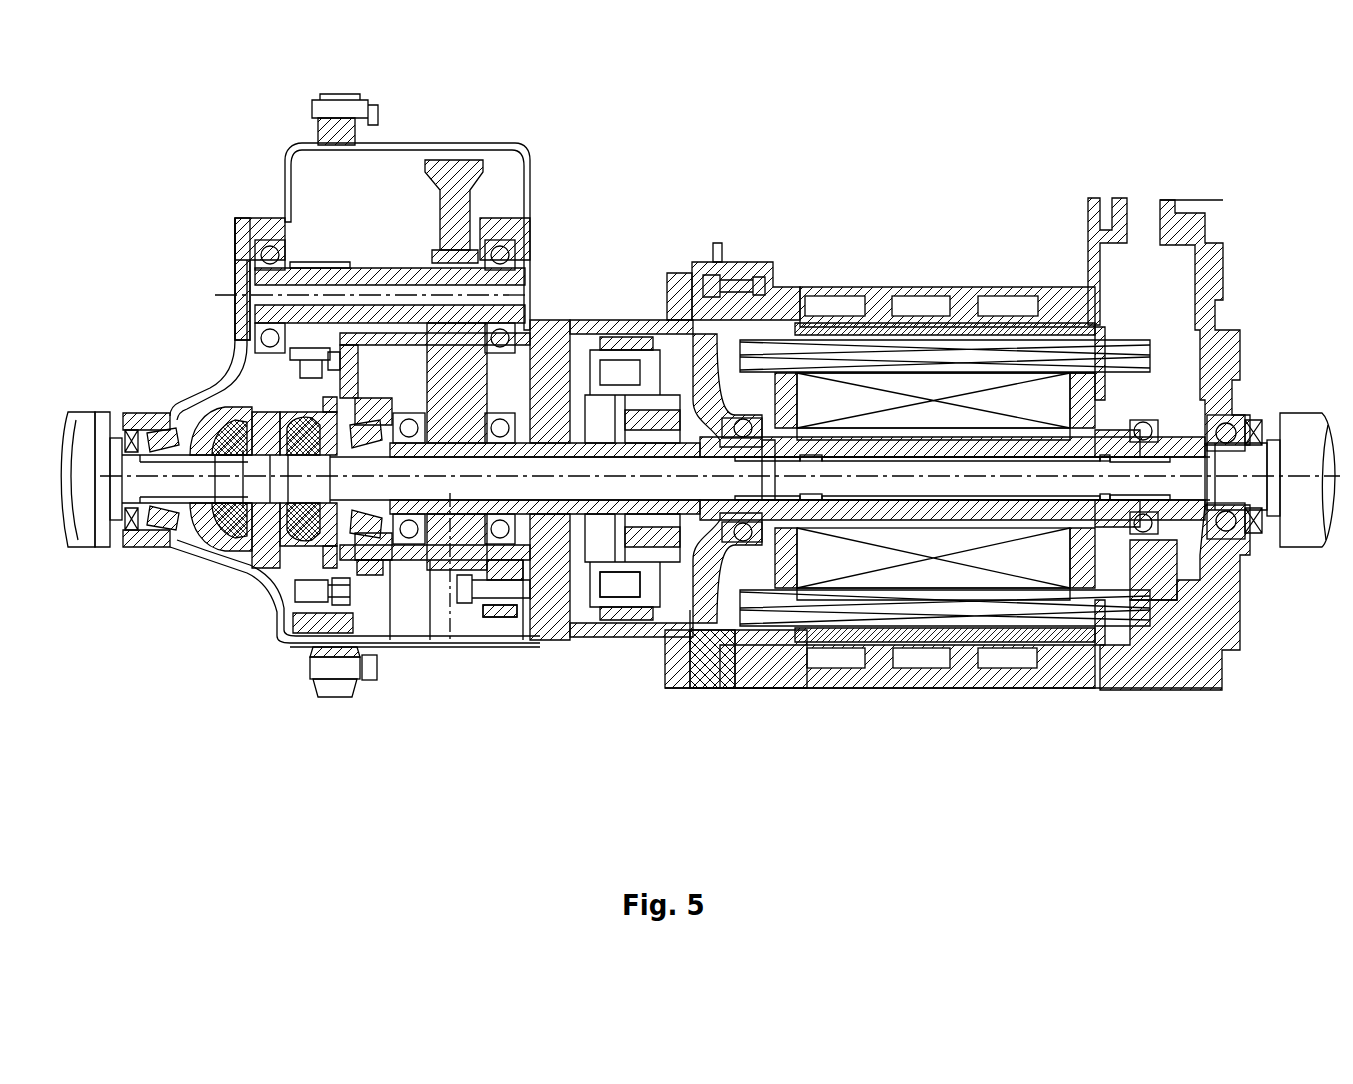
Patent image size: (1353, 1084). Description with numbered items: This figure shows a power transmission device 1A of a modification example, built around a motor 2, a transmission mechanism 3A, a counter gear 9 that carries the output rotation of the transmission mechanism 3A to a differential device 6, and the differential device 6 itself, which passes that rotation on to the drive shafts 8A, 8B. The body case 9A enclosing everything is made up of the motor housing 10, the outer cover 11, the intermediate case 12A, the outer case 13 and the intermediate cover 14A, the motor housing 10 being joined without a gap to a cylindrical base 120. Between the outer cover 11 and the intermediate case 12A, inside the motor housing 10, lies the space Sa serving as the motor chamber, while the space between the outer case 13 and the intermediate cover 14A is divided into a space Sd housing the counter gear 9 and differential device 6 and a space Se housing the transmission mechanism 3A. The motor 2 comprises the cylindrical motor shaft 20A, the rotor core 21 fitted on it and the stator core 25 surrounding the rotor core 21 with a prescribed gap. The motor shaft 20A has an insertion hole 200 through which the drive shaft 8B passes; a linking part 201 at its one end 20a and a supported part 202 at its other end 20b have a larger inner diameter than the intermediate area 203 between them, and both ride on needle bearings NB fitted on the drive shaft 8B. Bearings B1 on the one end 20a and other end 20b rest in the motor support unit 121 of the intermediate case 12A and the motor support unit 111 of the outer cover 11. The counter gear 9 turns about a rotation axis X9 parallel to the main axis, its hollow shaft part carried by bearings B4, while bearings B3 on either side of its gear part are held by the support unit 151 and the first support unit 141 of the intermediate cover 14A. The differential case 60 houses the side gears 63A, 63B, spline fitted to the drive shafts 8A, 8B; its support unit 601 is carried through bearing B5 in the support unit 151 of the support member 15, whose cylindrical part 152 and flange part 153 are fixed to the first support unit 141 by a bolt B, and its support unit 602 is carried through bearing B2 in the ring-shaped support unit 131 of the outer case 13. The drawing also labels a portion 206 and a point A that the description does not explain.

The power transmission device 1A is at (1222, 156).
The motor 2 is at (1088, 130).
The transmission mechanism 3A is at (652, 300).
The differential device 6 is at (226, 393).
The drive shaft 8A is at (88, 425).
The drive shaft 8B is at (1312, 425).
The counter gear 9 is at (510, 171).
The body case 9A is at (1135, 812).
The motor housing 10 is at (912, 700).
The outer cover 11 is at (1109, 702).
The intermediate case 12A is at (695, 700).
The outer case 13 is at (326, 707).
The intermediate cover 14A is at (352, 697).
The support member 15 is at (533, 708).
The one end 20a is at (695, 450).
The other end 20b is at (1208, 452).
The motor shaft 20A is at (1000, 430).
The rotor core 21 is at (1073, 325).
The stator core 25 is at (834, 328).
The differential case 60 is at (230, 562).
The side gear 63A is at (207, 410).
The side gear 63B is at (335, 430).
The motor support unit 111 is at (1165, 540).
The cylindrical base 120 is at (713, 688).
The motor support unit 121 is at (836, 540).
The support unit 131 is at (133, 547).
The first support unit 141 is at (540, 612).
The support unit 151 is at (407, 640).
The cylindrical part 152 is at (456, 640).
The flange part 153 is at (510, 640).
The insertion hole 200 is at (910, 505).
The linking part 201 is at (755, 453).
The supported part 202 is at (1135, 455).
The intermediate area 203 is at (1000, 453).
The shaft sleeve 206 is at (835, 455).
The support unit 601 is at (378, 412).
The support unit 602 is at (132, 428).
The point A is at (698, 633).
The bolt B is at (478, 650).
The bearing B1 is at (744, 418).
The bearing B2 is at (1240, 522).
The bearing B3 is at (410, 450).
The bearing B4 is at (496, 252).
The bearing B5 is at (368, 455).
The needle bearing NB is at (812, 455).
The space Sa is at (805, 553).
The space Sd is at (387, 648).
The space Se is at (650, 560).
The rotation axis X9 is at (351, 294).